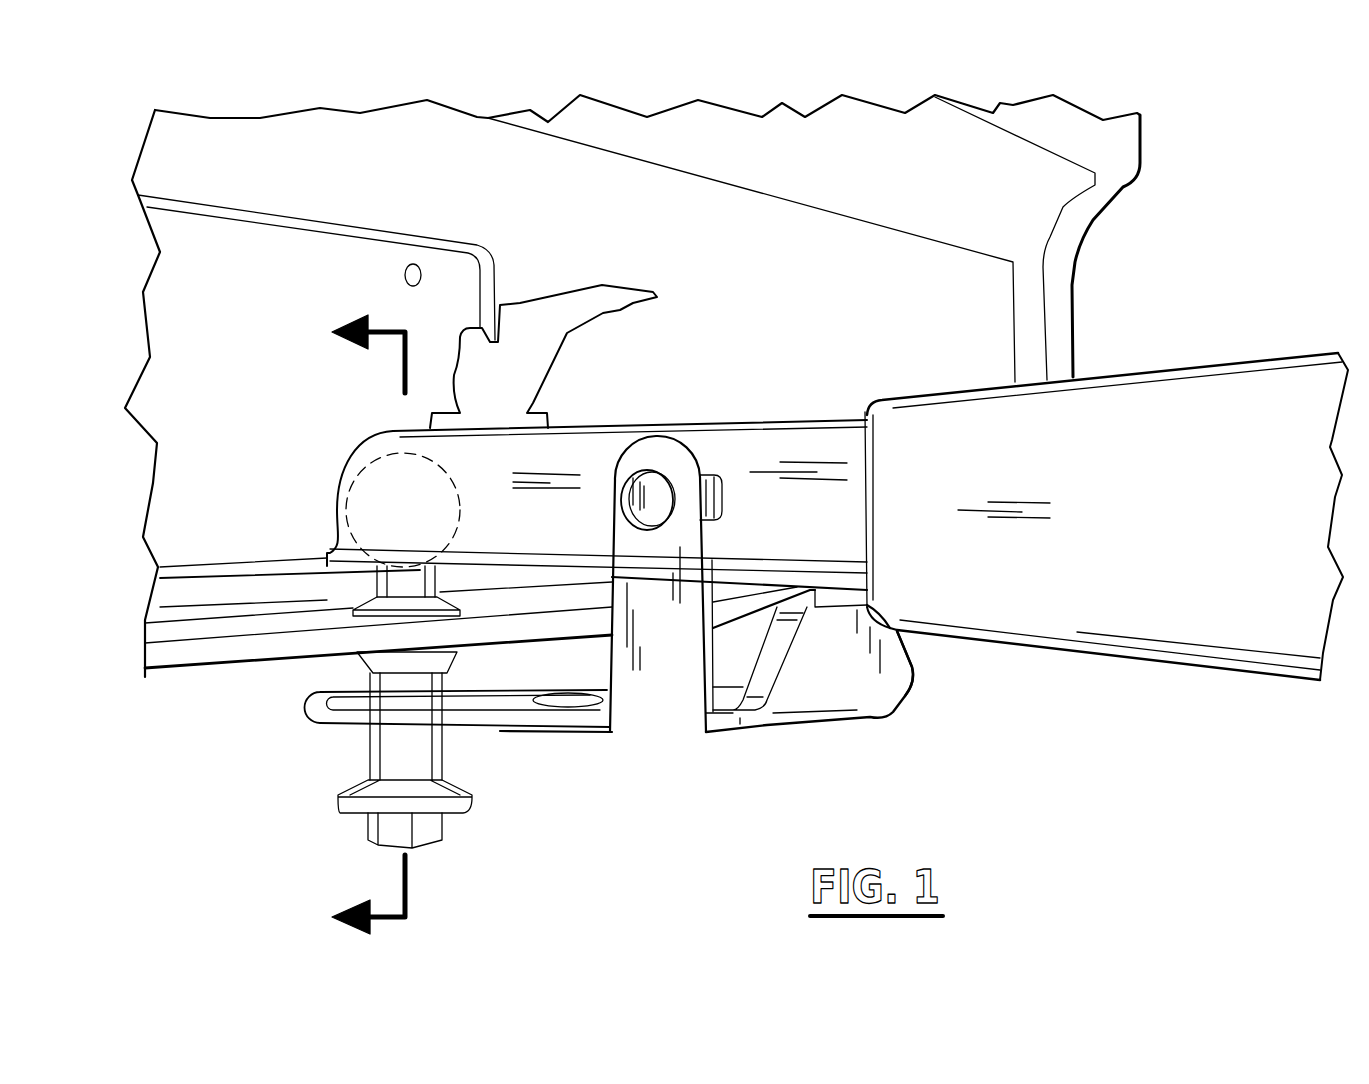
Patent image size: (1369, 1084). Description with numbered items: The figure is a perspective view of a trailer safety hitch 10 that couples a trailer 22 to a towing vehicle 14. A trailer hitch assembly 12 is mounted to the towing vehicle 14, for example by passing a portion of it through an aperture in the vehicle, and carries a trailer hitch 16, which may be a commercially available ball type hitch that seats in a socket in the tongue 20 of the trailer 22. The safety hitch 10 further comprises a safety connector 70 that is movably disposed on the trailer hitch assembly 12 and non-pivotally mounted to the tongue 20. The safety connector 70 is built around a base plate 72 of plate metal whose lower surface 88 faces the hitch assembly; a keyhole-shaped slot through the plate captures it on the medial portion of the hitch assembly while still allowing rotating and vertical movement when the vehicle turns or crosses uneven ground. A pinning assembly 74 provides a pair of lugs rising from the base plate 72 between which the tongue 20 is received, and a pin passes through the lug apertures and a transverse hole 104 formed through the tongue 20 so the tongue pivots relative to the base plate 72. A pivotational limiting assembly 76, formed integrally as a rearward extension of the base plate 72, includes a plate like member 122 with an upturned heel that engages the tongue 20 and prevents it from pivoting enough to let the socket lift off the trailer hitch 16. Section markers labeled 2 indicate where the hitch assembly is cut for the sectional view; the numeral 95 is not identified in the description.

The section line 2- 2 is at (346, 623).
The trailer safety hitch 10 is at (641, 610).
The trailer hitch assembly 12 is at (332, 803).
The towing vehicle 14 is at (242, 664).
The trailer hitch 16 is at (336, 617).
The tongue 20 is at (627, 420).
The trailer 22 is at (1181, 358).
The safety connector 70 is at (771, 738).
The base plate 72 is at (503, 730).
The pinning assembly 74 is at (727, 492).
The pivotational limiting assembly 76 is at (859, 723).
The lower surface 88 is at (582, 730).
The slot 95 is at (553, 697).
The transverse hole 104 is at (727, 500).
The plate like member 122 is at (878, 683).